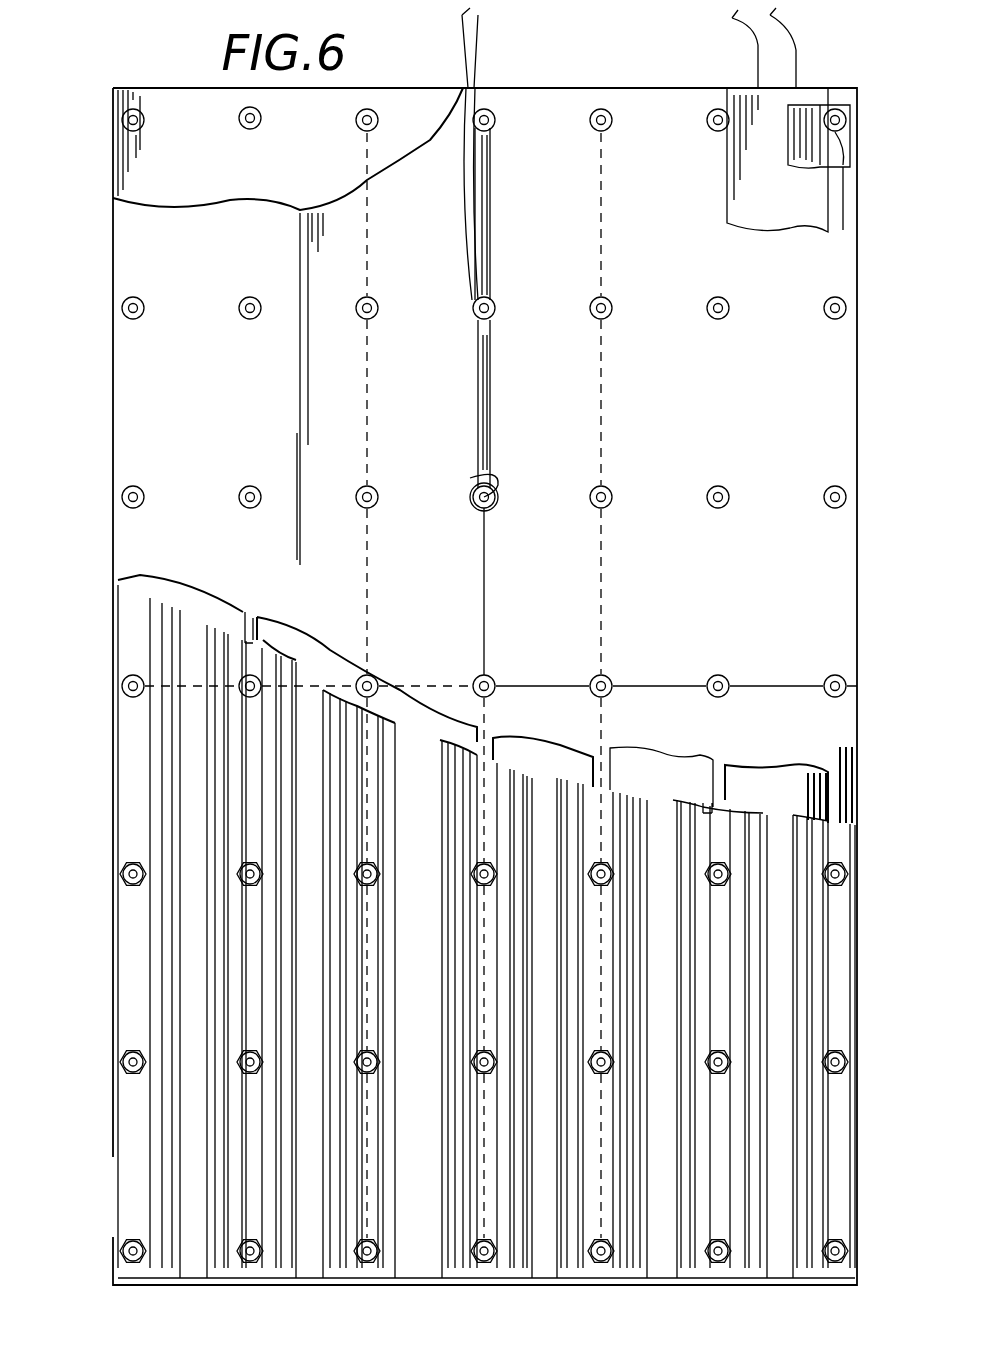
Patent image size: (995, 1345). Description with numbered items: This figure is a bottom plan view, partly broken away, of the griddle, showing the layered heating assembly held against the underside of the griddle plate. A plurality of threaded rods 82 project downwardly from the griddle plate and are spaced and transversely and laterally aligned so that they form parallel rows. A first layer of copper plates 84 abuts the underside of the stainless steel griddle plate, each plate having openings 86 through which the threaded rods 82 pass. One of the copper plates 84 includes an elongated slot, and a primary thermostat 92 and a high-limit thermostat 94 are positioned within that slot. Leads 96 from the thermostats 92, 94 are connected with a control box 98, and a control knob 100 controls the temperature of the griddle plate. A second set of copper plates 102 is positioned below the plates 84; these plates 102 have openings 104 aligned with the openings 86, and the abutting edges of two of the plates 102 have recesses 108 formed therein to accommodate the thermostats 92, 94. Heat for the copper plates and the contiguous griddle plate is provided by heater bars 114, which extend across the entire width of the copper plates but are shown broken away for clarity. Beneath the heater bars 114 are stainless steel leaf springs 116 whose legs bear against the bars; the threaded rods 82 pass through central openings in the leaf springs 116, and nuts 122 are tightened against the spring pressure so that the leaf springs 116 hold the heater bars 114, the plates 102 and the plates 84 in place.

The threaded rods 82 is at (250, 490).
The copper plates 84 is at (170, 177).
The openings 86 is at (262, 125).
The primary thermostat 92 is at (490, 368).
The high-limit thermostat 94 is at (493, 215).
The leads 96 is at (470, 48).
The control box 98 is at (795, 220).
The control knob 100 is at (814, 184).
The second set of copper plates 102 is at (163, 412).
The openings 104 is at (262, 276).
The recesses 108 is at (490, 462).
The heater bars 114 is at (328, 650).
The leaf springs 116 is at (255, 615).
The nuts 122 is at (250, 872).